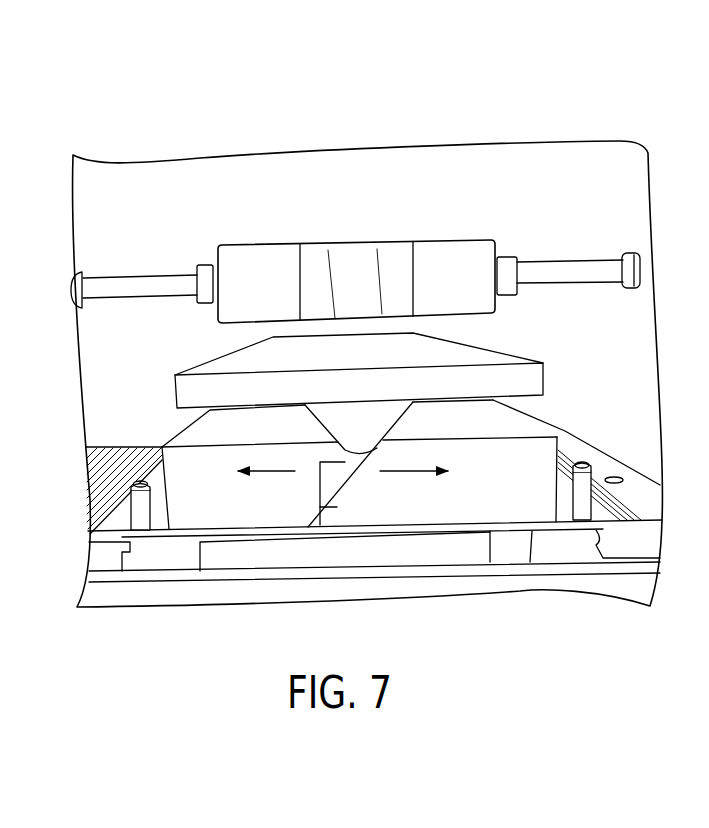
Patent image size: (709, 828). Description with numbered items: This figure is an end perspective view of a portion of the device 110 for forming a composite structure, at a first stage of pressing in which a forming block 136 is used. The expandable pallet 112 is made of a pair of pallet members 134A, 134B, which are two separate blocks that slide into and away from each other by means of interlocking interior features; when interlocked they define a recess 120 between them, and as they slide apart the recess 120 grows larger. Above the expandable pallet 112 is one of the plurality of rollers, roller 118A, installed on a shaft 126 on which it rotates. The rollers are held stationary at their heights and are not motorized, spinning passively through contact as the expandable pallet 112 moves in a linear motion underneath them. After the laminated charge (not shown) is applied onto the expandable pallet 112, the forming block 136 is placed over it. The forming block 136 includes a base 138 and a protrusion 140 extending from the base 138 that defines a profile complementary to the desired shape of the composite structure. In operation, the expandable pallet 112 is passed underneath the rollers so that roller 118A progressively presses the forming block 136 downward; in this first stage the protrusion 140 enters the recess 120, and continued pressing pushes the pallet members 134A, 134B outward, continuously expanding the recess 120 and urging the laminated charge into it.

The device 110 is at (137, 127).
The expandable pallet 112 is at (128, 488).
The roller 118A is at (356, 236).
The recess 120 is at (362, 456).
The shaft 126 is at (100, 282).
The pallet member 134A is at (203, 510).
The pallet member 134B is at (463, 503).
The forming block 136 is at (160, 392).
The base 138 is at (212, 371).
The protrusion 140 is at (352, 414).